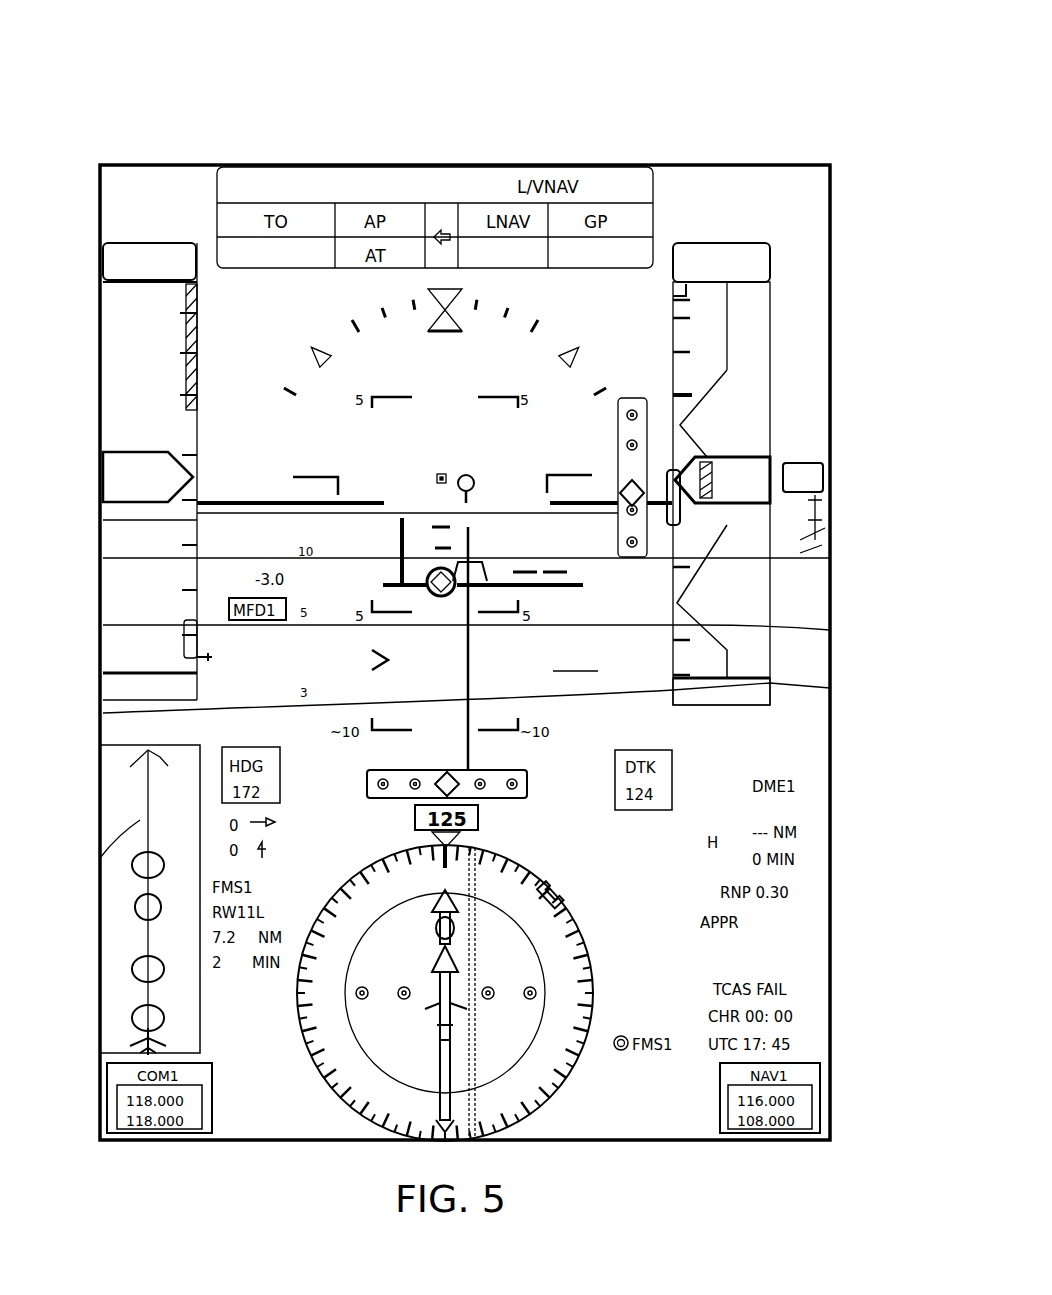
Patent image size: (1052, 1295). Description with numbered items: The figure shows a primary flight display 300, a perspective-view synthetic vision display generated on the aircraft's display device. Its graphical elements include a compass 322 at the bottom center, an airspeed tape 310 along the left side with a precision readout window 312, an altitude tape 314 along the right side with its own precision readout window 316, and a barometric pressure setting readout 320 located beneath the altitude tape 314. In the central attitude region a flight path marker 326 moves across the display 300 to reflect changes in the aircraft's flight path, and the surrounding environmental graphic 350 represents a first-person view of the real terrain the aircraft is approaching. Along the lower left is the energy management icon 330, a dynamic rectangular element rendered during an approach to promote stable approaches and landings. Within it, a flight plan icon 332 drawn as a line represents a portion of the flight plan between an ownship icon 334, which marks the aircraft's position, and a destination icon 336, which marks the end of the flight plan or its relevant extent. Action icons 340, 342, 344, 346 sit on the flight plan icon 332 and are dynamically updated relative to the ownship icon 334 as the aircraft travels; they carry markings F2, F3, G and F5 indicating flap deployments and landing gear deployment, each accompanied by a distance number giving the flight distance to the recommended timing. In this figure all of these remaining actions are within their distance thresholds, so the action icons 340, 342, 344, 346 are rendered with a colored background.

The primary flight display 300 is at (126, 82).
The airspeed tape 310 is at (100, 399).
The precision readout window 312 is at (100, 479).
The altitude tape 314 is at (690, 392).
The precision readout window 316 is at (683, 510).
The barometric pressure setting readout 320 is at (725, 705).
The compass 322 is at (590, 937).
The flight path marker 326 is at (417, 580).
The energy management icon 330 is at (148, 770).
The flight plan icon 332 is at (120, 822).
The ownship icon 334 is at (140, 1036).
The destination icon 336 is at (133, 752).
The action icon 340 is at (132, 1017).
The action icon 342 is at (132, 968).
The action icon 344 is at (135, 906).
The action icon 346 is at (132, 864).
The environmental graphic 350 is at (575, 661).